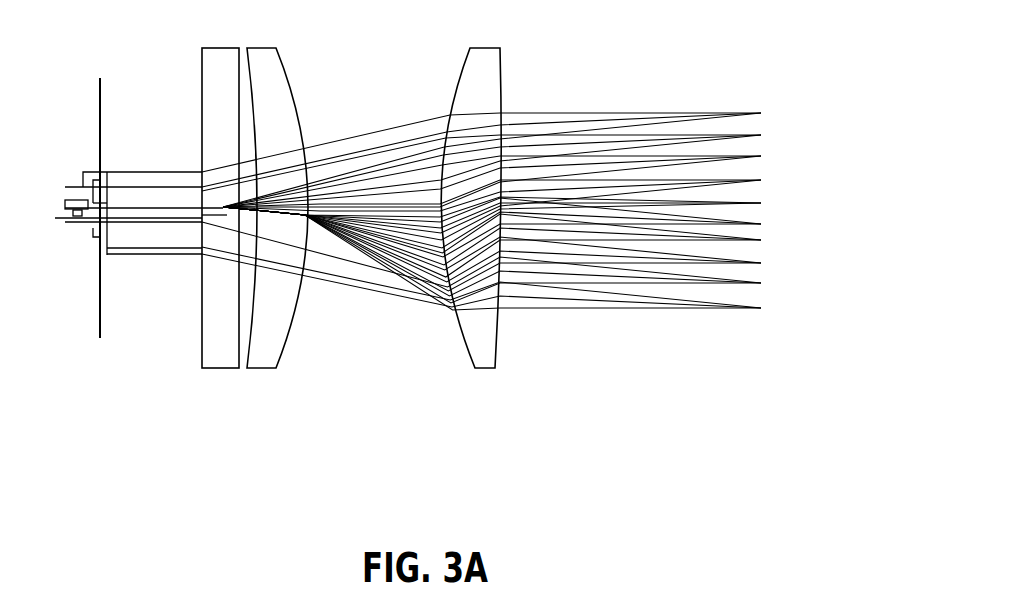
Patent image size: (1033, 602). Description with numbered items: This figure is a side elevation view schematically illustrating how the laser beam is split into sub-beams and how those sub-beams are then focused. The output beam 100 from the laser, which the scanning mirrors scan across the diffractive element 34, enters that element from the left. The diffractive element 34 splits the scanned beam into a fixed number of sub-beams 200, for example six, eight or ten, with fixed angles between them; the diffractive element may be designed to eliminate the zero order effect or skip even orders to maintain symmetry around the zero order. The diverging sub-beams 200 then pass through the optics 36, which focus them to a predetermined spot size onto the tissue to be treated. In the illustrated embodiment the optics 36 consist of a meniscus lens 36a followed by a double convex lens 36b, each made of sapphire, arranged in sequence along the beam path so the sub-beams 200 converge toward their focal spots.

The sub-beams 200 is at (713, 70).
The output beam 100 is at (152, 258).
The diffractive element 34 is at (217, 370).
The optics 36 is at (193, 418).
The meniscus lens 36a is at (268, 370).
The double convex lens 36b is at (488, 370).